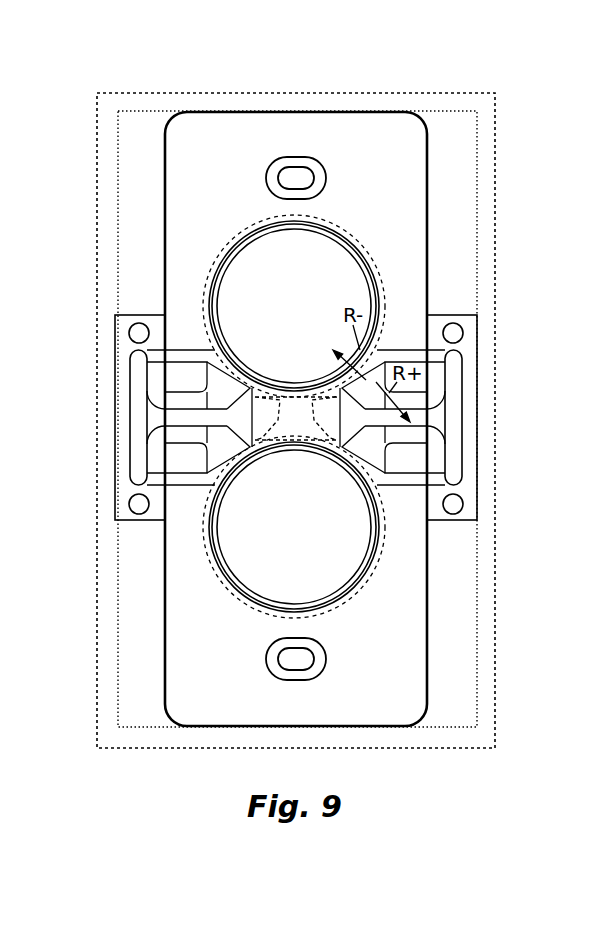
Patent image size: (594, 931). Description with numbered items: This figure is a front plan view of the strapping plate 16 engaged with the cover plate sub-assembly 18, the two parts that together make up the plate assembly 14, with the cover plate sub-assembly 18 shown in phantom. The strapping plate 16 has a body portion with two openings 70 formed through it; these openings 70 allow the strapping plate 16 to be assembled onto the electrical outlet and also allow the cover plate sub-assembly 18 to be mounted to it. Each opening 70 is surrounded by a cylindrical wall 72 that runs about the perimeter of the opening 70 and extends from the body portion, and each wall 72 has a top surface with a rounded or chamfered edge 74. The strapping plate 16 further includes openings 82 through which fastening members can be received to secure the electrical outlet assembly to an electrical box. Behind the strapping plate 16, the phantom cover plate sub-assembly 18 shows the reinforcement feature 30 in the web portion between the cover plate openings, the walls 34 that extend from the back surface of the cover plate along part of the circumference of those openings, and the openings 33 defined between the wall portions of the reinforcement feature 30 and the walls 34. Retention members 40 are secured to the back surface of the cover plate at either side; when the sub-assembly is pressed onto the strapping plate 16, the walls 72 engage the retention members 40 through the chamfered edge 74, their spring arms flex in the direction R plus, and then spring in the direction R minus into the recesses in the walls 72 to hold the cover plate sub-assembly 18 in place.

The plate assembly 14 is at (203, 78).
The strapping plate 16 is at (437, 147).
The cover plate sub-assembly 18 is at (96, 183).
The reinforcement feature 30 is at (293, 428).
The openings 33 is at (210, 362).
The walls 34 is at (187, 281).
The retention members 40 is at (103, 438).
The openings 70 is at (247, 281).
The cylindrical wall 72 is at (322, 220).
The rounded or chamfered edge 74 is at (357, 237).
The openings 82 is at (285, 172).